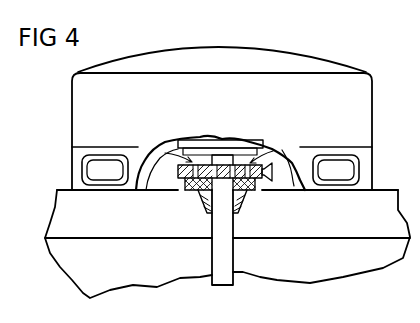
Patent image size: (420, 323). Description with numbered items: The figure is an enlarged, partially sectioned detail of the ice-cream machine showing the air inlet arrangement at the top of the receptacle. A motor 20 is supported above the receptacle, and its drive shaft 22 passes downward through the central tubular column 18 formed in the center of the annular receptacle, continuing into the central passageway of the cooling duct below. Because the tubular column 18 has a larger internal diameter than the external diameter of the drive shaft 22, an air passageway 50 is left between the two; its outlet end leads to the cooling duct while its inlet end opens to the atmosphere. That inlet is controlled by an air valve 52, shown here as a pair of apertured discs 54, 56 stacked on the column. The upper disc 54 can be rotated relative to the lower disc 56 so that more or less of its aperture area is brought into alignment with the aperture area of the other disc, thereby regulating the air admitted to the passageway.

The central tubular column 18 is at (202, 256).
The motor 20 is at (361, 98).
The motor drive shaft 22 is at (223, 250).
The air passageway 50 is at (237, 218).
The air valve 52 is at (282, 142).
The upper disc 54 is at (181, 167).
The lower disc 56 is at (182, 190).